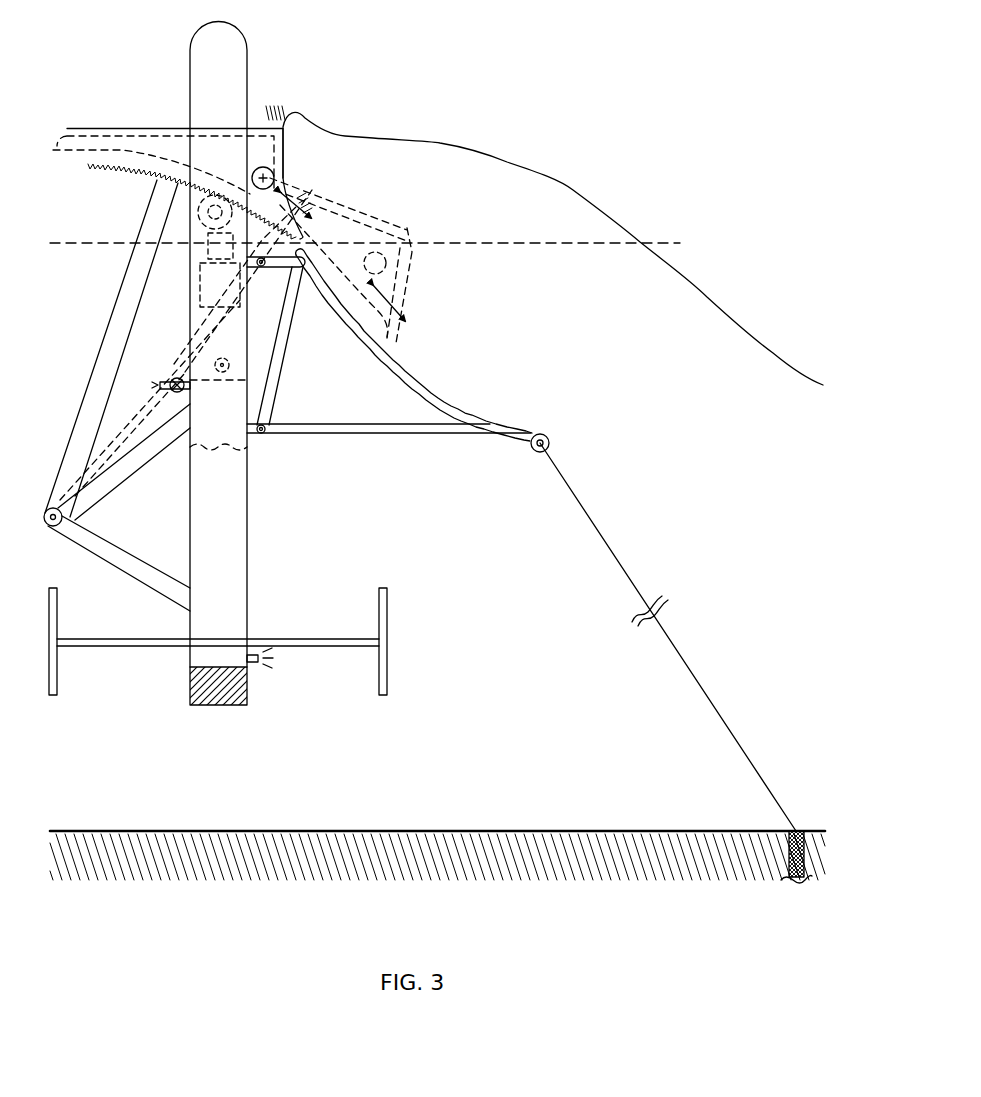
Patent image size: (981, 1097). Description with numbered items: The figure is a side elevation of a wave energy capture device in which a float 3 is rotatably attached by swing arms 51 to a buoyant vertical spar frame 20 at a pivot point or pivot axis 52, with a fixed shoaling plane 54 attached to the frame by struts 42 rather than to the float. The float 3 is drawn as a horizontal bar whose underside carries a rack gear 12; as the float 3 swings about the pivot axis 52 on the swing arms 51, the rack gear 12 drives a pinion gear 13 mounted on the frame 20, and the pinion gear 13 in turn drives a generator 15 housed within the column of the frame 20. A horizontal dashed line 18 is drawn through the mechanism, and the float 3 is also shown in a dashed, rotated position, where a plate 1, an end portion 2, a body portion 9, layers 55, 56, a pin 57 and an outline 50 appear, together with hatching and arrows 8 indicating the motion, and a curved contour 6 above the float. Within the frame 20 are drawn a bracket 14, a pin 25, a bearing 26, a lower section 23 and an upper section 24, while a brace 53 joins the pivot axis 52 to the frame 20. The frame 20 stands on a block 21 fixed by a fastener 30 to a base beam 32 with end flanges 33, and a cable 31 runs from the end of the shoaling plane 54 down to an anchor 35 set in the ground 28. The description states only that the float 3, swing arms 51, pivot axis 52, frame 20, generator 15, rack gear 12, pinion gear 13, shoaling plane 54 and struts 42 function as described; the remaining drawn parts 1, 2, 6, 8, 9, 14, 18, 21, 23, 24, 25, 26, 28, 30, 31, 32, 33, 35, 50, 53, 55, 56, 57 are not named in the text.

The support plate 1 is at (284, 150).
The toothed bar end 2 is at (80, 164).
The float 3 is at (128, 127).
The hand / body contour 6 is at (297, 117).
The direction of movement 8 is at (295, 192).
The bar body 9 is at (141, 163).
The rack gear 12 is at (108, 168).
The pinion gear 13 is at (210, 210).
The bearing bracket 14 is at (212, 237).
The generator 15 is at (208, 283).
The horizontal axis 18 is at (74, 248).
The buoyant vertical spar frame 20 is at (248, 320).
The base block 21 is at (235, 694).
The mast lower section 23 is at (218, 450).
The mast upper section 24 is at (233, 401).
The locking pin 25 is at (236, 367).
The pivot bearing 26 is at (177, 378).
The ground 28 is at (577, 831).
The fastener 30 is at (261, 667).
The tension cable 31 is at (692, 683).
The base beam 32 is at (305, 638).
The beam end flange 33 is at (57, 607).
The ground anchor 35 is at (795, 831).
The struts 42 is at (273, 268).
The plate outline 50 is at (127, 143).
The swing arms 51 is at (106, 335).
The pivot point or pivot axis 52 is at (51, 526).
The frame brace 53 is at (102, 547).
The fixed shoaling plane 54 is at (425, 392).
The plate layer 55 is at (184, 126).
The plate layer 56 is at (163, 126).
The pivot pin 57 is at (260, 167).